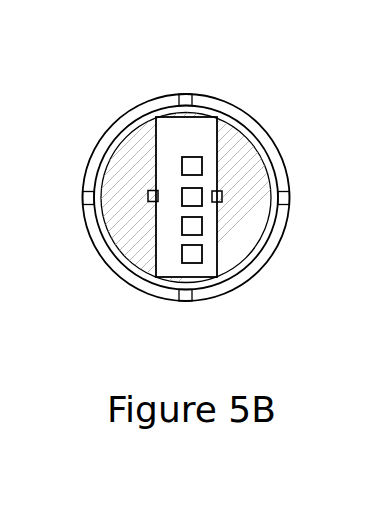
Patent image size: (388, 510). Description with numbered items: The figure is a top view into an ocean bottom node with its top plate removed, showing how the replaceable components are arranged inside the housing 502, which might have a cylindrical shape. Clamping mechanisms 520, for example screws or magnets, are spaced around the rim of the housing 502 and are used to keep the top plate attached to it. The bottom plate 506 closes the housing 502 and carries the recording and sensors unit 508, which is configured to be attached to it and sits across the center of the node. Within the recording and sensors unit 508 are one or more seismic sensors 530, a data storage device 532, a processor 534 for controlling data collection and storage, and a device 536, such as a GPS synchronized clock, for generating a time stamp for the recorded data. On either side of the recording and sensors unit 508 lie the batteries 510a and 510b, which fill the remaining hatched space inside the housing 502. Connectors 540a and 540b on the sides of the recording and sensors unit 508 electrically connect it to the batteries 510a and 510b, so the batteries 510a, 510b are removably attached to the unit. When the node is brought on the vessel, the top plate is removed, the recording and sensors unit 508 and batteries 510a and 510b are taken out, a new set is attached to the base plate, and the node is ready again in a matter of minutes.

The housing 502 is at (91, 222).
The bottom plate 506 is at (113, 244).
The recording and sensors unit 508 is at (195, 158).
The battery 510a is at (135, 159).
The battery 510b is at (232, 160).
The clamping mechanism 520 is at (84, 197).
The seismic sensor 530 is at (198, 255).
The data storage device 532 is at (200, 227).
The processor 534 is at (200, 190).
The device for generating a time stamp 536 is at (198, 190).
The connector 540a is at (151, 191).
The connector 540b is at (222, 198).